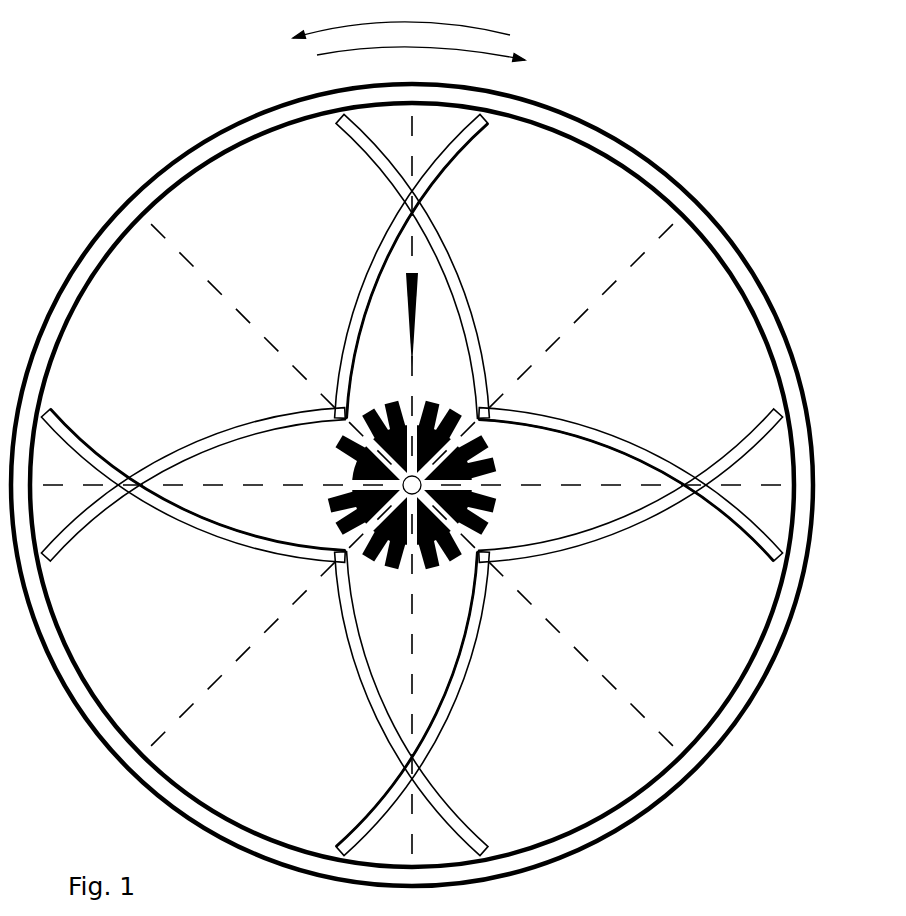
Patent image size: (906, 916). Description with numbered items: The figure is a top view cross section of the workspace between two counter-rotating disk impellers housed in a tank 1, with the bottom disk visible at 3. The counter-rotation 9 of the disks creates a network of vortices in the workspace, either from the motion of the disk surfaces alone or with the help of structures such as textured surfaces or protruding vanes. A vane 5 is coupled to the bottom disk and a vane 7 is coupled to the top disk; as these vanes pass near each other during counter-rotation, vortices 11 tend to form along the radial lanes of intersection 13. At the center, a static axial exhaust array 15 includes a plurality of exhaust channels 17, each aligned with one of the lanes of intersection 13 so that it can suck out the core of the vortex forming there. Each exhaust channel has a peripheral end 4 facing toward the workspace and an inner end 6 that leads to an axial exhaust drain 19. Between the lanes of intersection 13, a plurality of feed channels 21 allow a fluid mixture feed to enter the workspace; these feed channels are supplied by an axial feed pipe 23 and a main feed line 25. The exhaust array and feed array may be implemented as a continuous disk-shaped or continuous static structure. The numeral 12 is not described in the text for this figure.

The tank 1 is at (625, 140).
The bottom disk 3 is at (708, 275).
The peripheral end 4 is at (412, 417).
The vane coupled to the bottom disk 5 is at (448, 272).
The inner end 6 is at (417, 467).
The vane coupled to the top disk 7 is at (440, 157).
The counter-rotation 9 is at (527, 40).
The vortices 11 is at (410, 310).
The radial channel 12 is at (412, 385).
The radial lanes of intersection 13 is at (412, 252).
The static axial exhaust array 15 is at (337, 472).
The exhaust channels 17 is at (417, 415).
The axial exhaust drain 19 is at (470, 473).
The feed channels 21 is at (440, 555).
The axial feed pipe 23 is at (395, 563).
The main feed line 25 is at (453, 503).